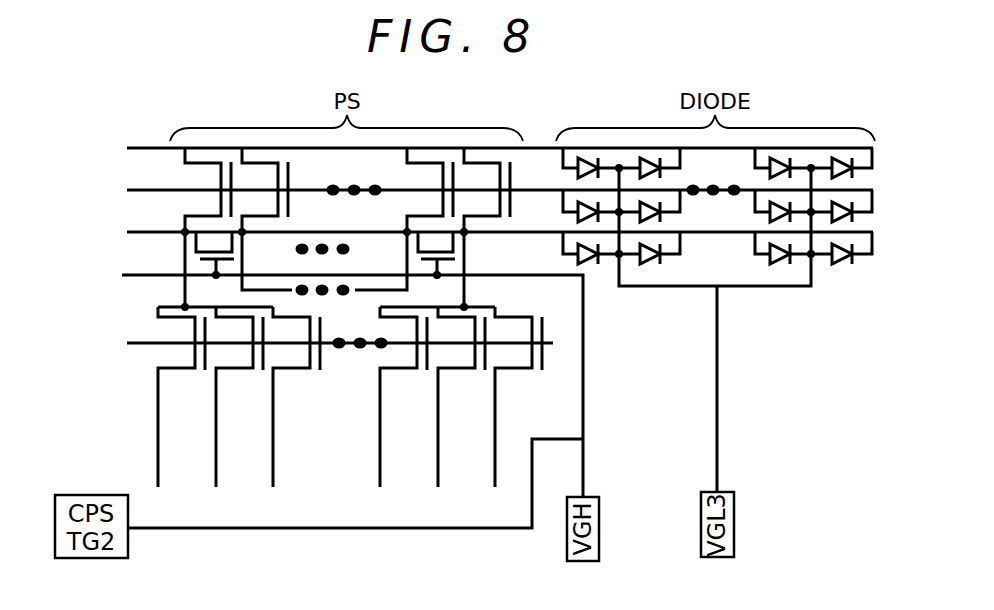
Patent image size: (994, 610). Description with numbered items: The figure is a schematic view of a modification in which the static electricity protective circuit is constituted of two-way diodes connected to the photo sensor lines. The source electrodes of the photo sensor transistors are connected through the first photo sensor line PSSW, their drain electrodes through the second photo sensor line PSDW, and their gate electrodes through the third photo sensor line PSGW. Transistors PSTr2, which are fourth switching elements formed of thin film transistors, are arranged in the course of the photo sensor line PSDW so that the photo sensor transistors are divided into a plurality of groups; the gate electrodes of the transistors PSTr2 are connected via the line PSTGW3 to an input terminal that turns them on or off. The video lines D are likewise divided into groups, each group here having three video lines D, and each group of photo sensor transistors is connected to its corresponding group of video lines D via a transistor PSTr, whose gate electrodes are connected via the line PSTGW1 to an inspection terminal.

The first photo sensor line PSSW is at (459, 148).
The third photo sensor line PSGW is at (459, 190).
The second photo sensor line PSDW is at (459, 232).
The line PSTGW3 is at (299, 379).
The line PSTGW1 is at (285, 343).
The transistor PSTr2 is at (286, 255).
The transistor PSTr is at (317, 390).
The video line D is at (156, 403).